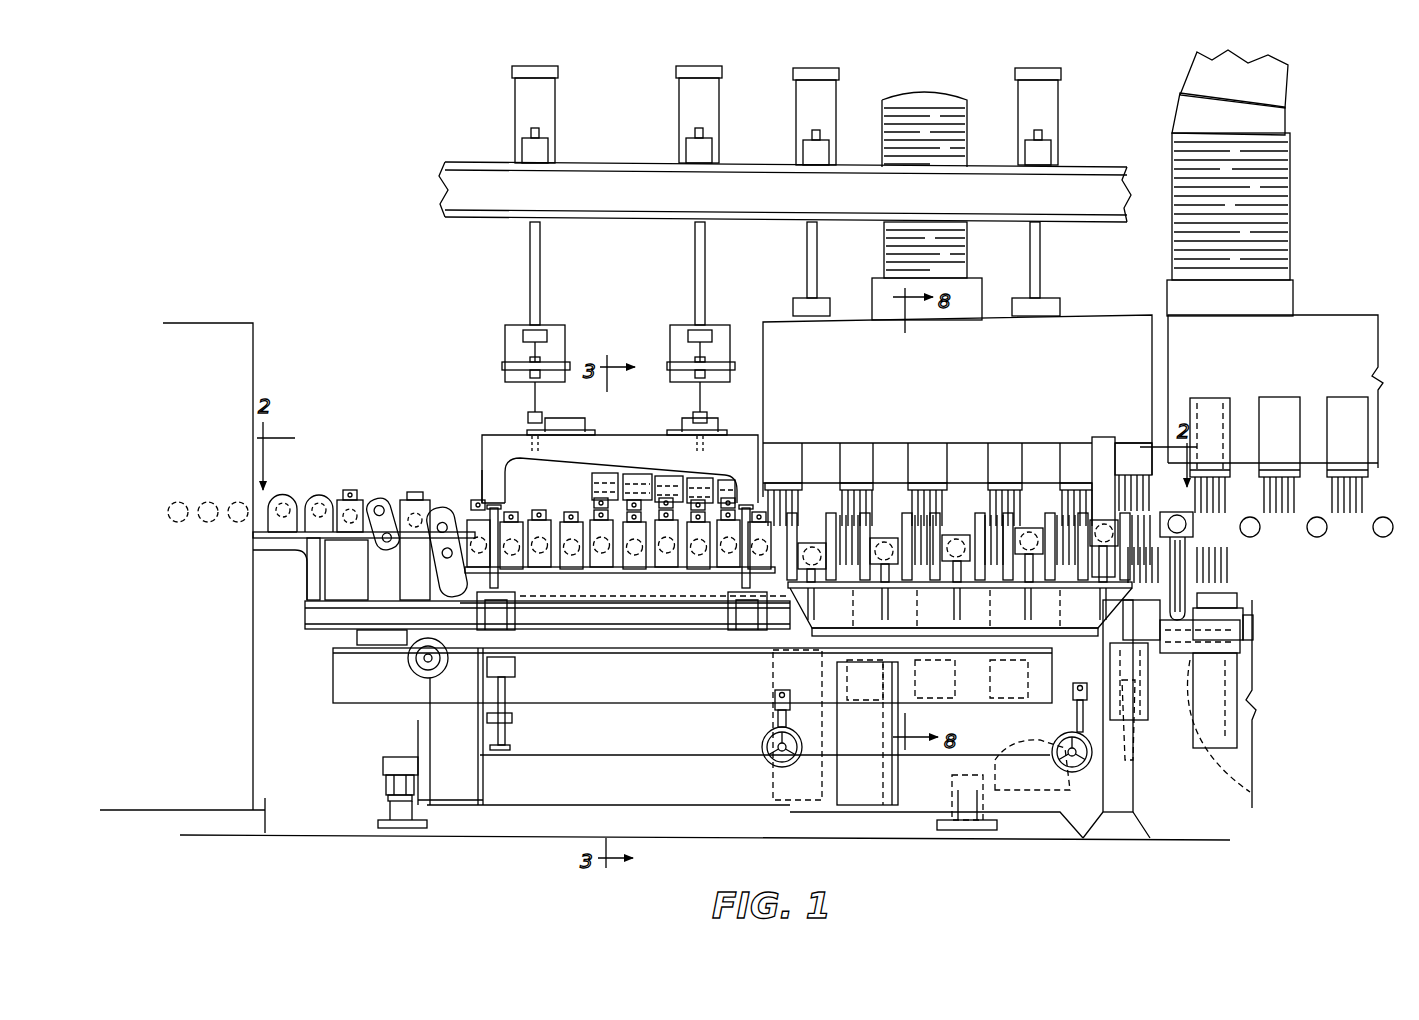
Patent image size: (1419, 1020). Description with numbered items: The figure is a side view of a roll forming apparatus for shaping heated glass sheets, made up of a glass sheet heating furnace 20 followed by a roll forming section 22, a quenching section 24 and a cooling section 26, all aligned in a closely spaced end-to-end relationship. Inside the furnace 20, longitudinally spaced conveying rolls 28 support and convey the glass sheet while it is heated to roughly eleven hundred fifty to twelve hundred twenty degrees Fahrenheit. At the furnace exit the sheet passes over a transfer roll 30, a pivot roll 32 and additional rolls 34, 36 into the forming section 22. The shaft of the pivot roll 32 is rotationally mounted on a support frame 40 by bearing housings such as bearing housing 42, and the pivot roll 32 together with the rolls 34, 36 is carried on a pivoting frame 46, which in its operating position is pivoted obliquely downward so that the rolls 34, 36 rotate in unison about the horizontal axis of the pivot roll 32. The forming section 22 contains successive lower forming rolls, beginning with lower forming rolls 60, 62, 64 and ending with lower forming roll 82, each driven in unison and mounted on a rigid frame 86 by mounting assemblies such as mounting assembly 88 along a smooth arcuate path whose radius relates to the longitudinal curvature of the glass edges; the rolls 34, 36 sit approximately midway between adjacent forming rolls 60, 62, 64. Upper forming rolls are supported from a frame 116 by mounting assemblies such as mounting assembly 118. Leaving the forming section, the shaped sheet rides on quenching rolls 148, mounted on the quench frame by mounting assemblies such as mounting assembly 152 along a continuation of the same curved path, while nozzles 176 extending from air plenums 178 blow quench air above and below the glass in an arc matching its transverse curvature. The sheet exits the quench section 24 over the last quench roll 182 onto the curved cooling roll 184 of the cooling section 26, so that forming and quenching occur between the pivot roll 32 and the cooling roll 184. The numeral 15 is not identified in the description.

The glass sheet heating furnace 20 is at (206, 289).
The roll forming section 22 is at (623, 116).
The quenching section 24 is at (944, 69).
The cooling section 26 is at (1339, 146).
The conveying rolls 28 is at (234, 501).
The transfer roll 30 is at (288, 515).
The pivot roll 32 is at (318, 498).
The additional roll 34 is at (386, 535).
The additional roll 36 is at (447, 520).
The support frame 40 is at (332, 597).
The bearing housing 42 is at (283, 514).
The pivoting frame 46 is at (385, 585).
The lower forming roll 60 is at (343, 498).
The lower forming roll 62 is at (429, 500).
The lower forming roll 64 is at (484, 484).
The lower forming roll 82 is at (768, 488).
The rigid frame 86 is at (565, 598).
The mounting assembly 88 is at (598, 519).
The frame 116 is at (621, 433).
The mounting assembly 118 is at (600, 500).
The quenching rolls 148 is at (808, 545).
The mounting assembly 152 is at (1020, 563).
The nozzles 176 is at (996, 558).
The air plenum 178 is at (1100, 316).
The last quench roll 182 is at (1102, 520).
The cooling roll 184 is at (1195, 520).
The section indicator 15 is at (358, 455).